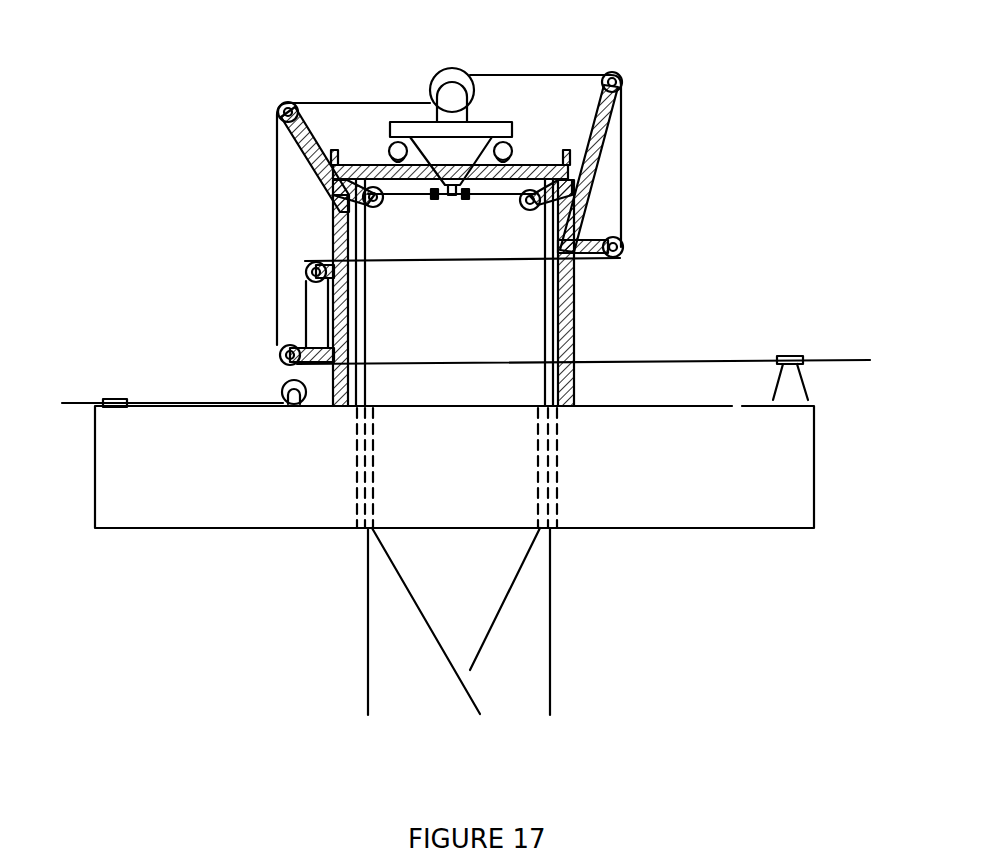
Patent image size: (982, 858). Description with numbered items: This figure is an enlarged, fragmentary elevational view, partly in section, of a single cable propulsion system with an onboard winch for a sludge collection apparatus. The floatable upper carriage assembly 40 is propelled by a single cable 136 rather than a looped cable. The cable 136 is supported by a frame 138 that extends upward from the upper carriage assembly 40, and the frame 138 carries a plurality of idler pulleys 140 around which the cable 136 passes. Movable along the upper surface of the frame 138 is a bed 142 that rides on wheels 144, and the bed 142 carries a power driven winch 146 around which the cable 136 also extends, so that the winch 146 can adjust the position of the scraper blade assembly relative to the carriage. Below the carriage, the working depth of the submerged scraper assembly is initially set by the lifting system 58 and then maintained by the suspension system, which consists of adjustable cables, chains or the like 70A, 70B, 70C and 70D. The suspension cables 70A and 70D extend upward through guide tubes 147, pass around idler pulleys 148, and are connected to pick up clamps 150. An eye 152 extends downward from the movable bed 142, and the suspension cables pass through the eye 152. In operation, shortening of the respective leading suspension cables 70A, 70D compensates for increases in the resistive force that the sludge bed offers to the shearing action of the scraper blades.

The upper carriage assembly 40 is at (165, 520).
The lifting system 58 is at (562, 582).
The suspension cable 70A is at (365, 632).
The suspension cable 70B is at (478, 662).
The suspension cable 70C is at (420, 608).
The suspension cable 70D is at (550, 620).
The single cable 136 is at (305, 100).
The frame 138 is at (580, 350).
The idler pulleys 140 is at (288, 102).
The bed 142 is at (500, 122).
The wheels 144 is at (388, 148).
The power driven winch 146 is at (432, 92).
The guide tubes 147 is at (375, 486).
The idler pulleys 148 is at (377, 208).
The pick up clamps 150 is at (434, 200).
The eye 152 is at (453, 198).